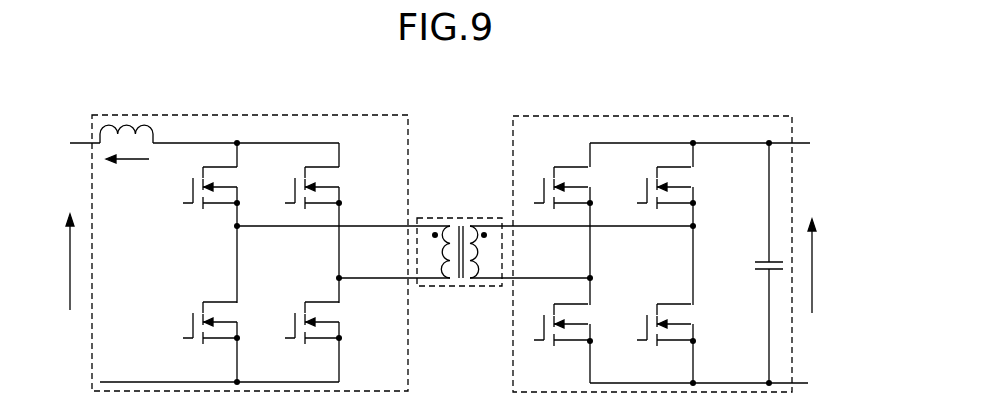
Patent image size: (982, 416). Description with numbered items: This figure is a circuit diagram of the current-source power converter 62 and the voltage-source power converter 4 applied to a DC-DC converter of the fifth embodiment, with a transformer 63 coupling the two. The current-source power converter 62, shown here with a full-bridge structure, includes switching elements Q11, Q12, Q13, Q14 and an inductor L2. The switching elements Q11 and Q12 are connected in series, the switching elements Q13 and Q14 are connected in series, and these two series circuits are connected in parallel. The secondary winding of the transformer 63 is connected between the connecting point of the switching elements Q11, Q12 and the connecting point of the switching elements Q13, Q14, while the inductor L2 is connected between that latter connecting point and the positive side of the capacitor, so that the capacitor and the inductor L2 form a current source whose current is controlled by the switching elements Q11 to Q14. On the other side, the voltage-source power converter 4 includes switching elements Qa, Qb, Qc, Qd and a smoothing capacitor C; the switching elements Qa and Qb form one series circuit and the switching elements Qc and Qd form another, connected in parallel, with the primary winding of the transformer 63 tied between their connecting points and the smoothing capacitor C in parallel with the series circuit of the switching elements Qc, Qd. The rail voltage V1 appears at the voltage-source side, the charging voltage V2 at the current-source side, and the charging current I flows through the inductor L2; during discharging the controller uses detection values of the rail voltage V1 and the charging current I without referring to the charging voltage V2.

The current-source power converter 62 is at (273, 114).
The voltage-source power converter 4 is at (737, 116).
The transformer 63 is at (463, 218).
The inductor L2 is at (133, 124).
The smoothing capacitor C is at (762, 262).
The switching element Q11 is at (192, 192).
The switching element Q12 is at (192, 316).
The switching element Q13 is at (294, 178).
The switching element Q14 is at (294, 312).
The switching element Qa is at (543, 180).
The switching element Qb is at (543, 318).
The switching element Qc is at (646, 180).
The switching element Qd is at (646, 318).
The rail voltage V1 is at (826, 266).
The charging voltage V2 is at (55, 262).
The charging current I is at (134, 160).